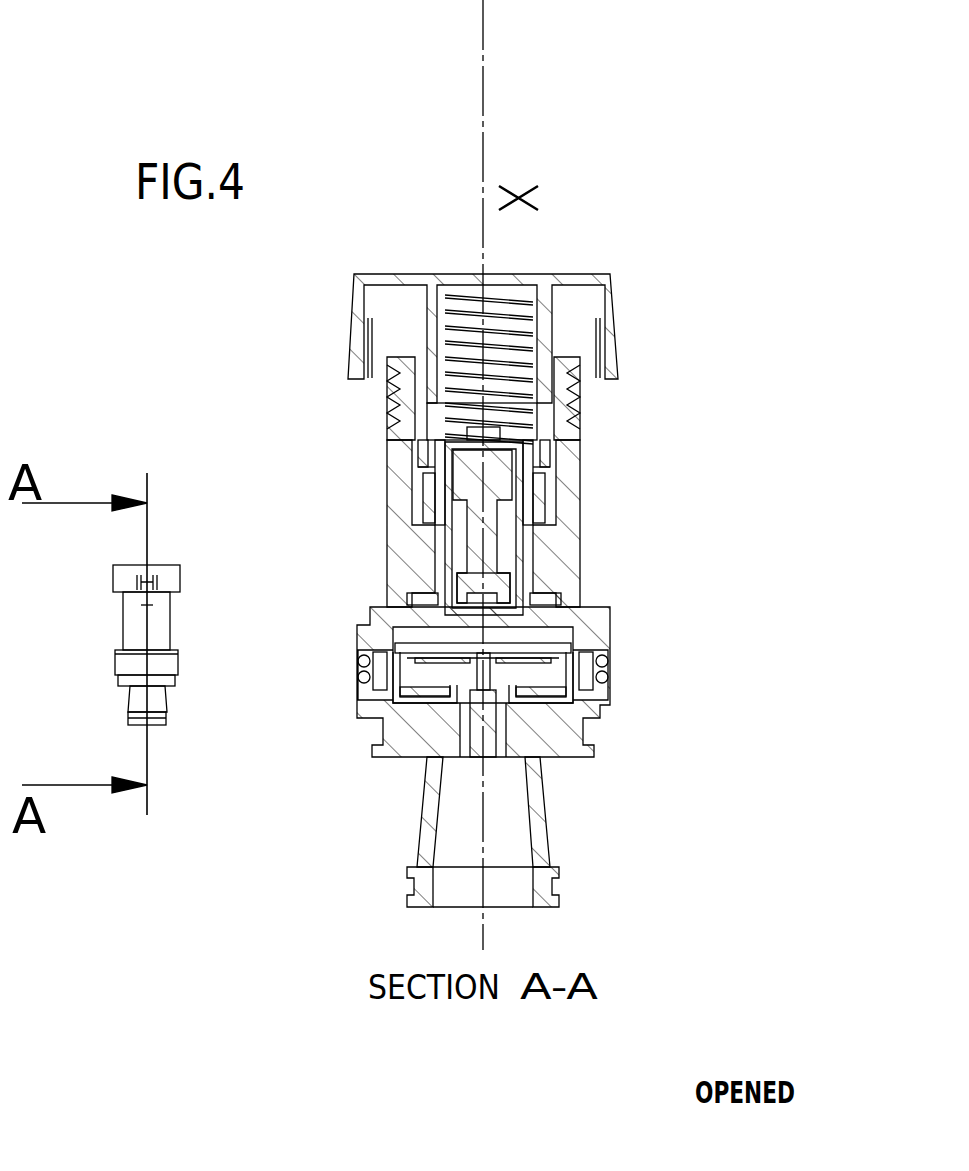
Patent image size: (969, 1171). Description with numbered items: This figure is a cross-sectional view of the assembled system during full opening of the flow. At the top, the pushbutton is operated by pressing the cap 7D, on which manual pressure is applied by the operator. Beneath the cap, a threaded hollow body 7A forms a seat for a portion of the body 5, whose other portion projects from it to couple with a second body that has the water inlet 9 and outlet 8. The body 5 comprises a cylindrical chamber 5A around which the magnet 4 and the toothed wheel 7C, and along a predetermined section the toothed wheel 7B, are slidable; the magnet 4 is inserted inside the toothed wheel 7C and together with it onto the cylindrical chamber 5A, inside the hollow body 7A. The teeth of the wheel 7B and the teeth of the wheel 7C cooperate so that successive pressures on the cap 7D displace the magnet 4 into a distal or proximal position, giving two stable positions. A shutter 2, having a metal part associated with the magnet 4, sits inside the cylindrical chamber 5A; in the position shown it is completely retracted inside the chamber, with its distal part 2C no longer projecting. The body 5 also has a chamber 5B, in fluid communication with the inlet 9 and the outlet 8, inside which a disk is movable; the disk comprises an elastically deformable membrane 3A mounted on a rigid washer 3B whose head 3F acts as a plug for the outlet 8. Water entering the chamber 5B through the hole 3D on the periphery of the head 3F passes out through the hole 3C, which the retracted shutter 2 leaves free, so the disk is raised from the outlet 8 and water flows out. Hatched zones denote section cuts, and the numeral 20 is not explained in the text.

The shutter 2 is at (520, 525).
The distal part of the shutter 2C is at (520, 590).
The elastically deformable membrane 3A is at (375, 670).
The rigid washer 3B is at (508, 745).
The hole 3C is at (485, 655).
The hole 3D is at (408, 690).
The head 3F is at (600, 697).
The magnet 4 is at (545, 480).
The body 5 is at (612, 663).
The cylindrical chamber 5A is at (447, 505).
The chamber 5B is at (405, 618).
The threaded hollow body 7A is at (575, 452).
The toothed wheel 7B is at (420, 439).
The toothed wheel 7C is at (515, 515).
The cap 7D is at (608, 302).
The outlet 8 is at (510, 890).
The inlet 9 is at (400, 760).
The adjusting nut 20 is at (580, 403).